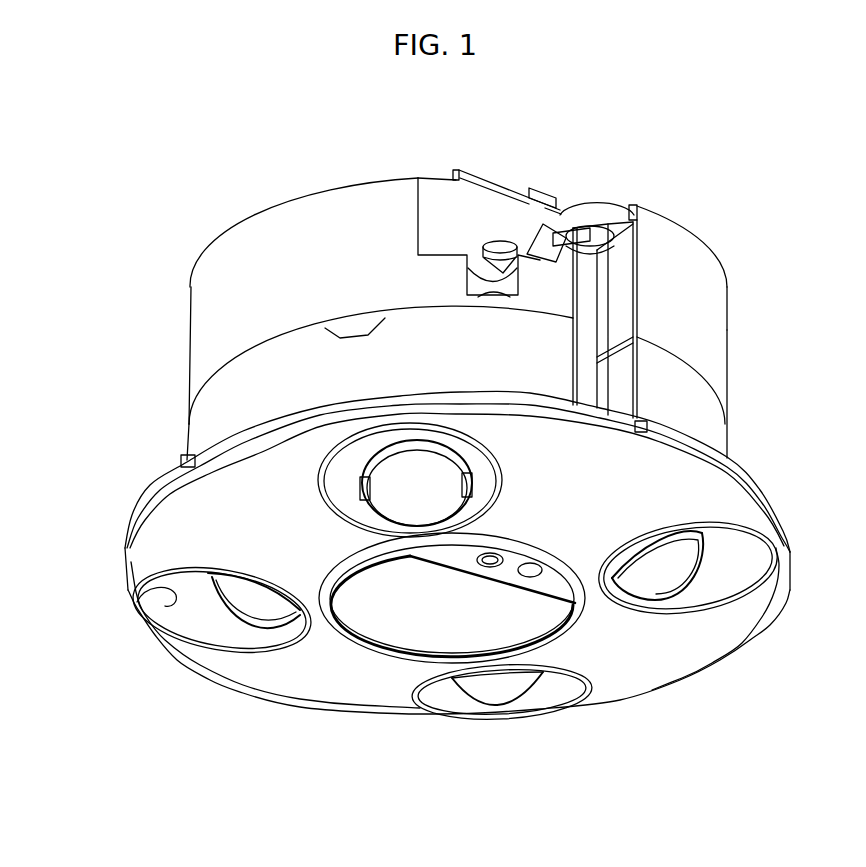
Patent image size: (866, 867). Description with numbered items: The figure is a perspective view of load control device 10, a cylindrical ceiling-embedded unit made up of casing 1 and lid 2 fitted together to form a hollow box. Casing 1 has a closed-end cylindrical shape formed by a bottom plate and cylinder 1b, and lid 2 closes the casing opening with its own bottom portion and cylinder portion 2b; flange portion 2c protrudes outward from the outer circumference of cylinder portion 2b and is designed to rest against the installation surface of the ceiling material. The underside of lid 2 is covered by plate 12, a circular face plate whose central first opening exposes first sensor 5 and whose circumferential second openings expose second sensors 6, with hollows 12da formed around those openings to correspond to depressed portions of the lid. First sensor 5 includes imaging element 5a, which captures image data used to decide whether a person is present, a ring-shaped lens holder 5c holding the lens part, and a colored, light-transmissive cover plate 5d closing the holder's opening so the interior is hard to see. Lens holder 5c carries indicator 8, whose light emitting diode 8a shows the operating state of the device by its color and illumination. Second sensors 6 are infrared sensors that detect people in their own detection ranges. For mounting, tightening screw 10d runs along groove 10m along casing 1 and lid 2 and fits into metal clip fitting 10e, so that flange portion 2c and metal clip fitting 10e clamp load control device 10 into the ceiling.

The casing 1 is at (212, 315).
The cylinder 1b is at (715, 321).
The lid 2 is at (203, 435).
The cylinder portion 2b is at (708, 428).
The flange portion 2c is at (775, 504).
The first sensor 5 is at (383, 612).
The imaging element 5a is at (432, 610).
The lens holder 5c is at (558, 584).
The cover plate 5d is at (552, 618).
The second sensors 6 is at (248, 612).
The indicator 8 is at (535, 563).
The light emitting diode 8a is at (503, 558).
The load control device 10 is at (752, 179).
The tightening screw 10d is at (585, 305).
The metal clip fitting 10e is at (503, 247).
The groove 10m is at (632, 391).
The plate 12 is at (653, 672).
The hollows 12da is at (137, 602).